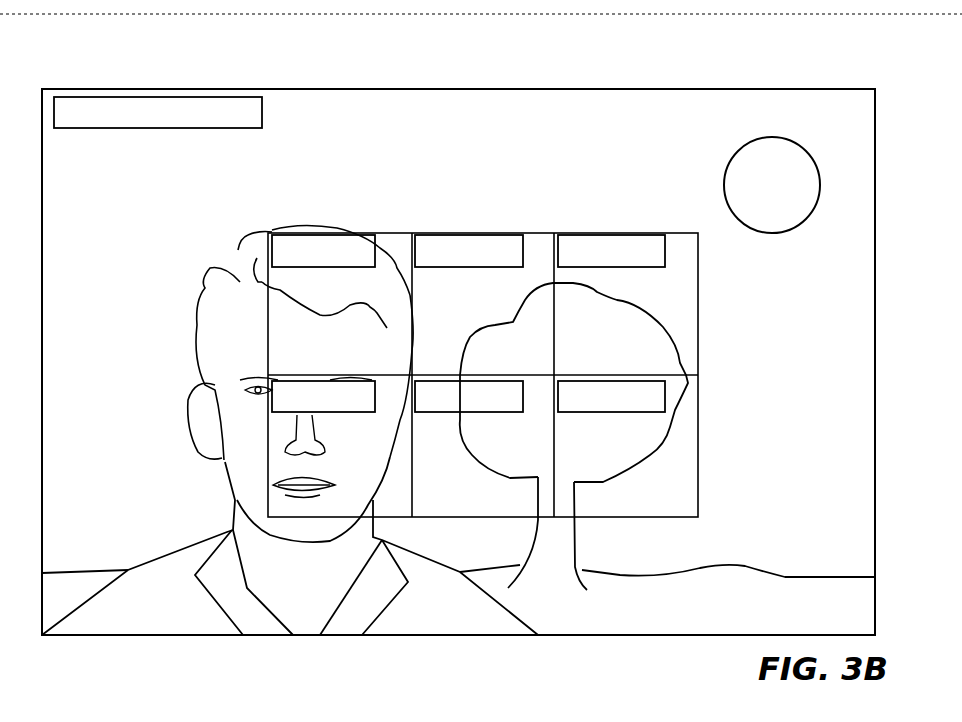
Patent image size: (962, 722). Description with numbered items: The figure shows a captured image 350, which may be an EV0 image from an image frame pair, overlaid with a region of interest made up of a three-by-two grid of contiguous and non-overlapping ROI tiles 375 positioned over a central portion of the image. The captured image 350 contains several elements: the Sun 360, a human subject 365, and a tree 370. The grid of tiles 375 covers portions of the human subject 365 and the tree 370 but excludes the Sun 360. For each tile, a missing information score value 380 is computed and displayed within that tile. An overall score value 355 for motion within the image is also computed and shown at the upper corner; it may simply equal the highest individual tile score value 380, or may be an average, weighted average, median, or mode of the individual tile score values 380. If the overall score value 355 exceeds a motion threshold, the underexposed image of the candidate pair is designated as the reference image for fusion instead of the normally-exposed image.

The captured image 350 is at (800, 62).
The overall score value 355 is at (256, 100).
The Sun 360 is at (737, 155).
The human subject 365 is at (198, 318).
The tree 370 is at (475, 327).
The Region of Interest tiles 375 is at (483, 345).
The missing information score value 380 is at (370, 232).